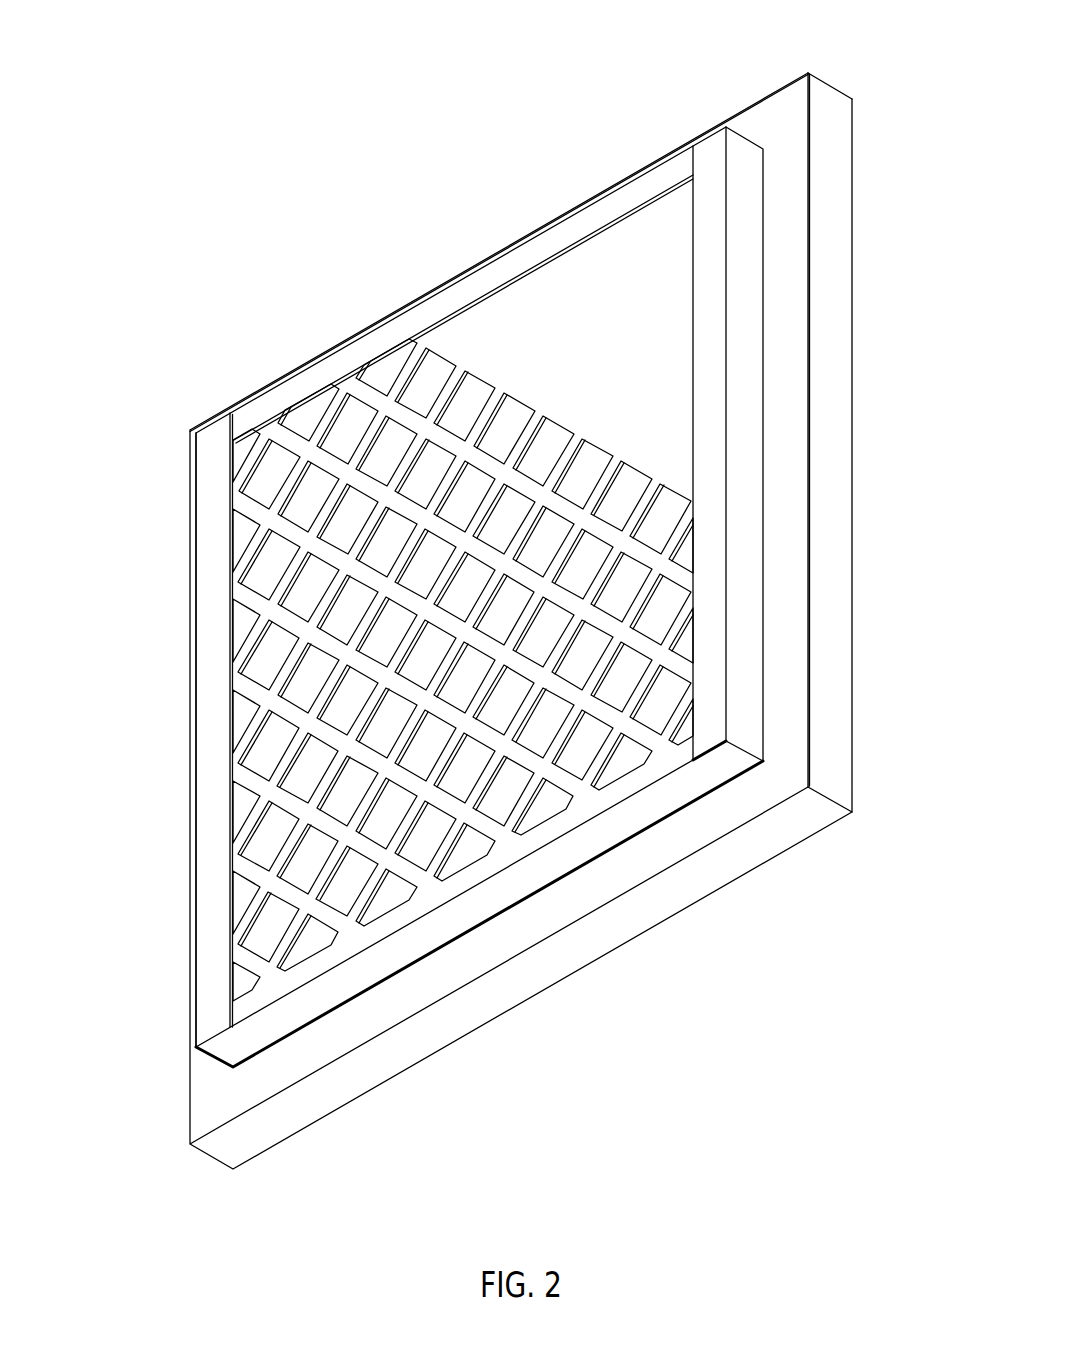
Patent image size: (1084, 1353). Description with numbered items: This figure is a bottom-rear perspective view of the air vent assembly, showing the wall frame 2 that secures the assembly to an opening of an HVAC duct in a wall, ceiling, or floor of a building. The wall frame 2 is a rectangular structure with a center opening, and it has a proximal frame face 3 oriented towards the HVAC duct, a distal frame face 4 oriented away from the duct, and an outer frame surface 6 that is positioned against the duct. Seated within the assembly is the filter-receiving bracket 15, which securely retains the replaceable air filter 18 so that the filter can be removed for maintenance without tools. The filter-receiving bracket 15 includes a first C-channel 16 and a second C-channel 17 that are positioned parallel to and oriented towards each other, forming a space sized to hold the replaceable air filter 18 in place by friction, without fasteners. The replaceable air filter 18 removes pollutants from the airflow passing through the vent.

The wall frame 2 is at (558, 584).
The proximal frame face 3 is at (787, 93).
The distal frame face 4 is at (854, 119).
The outer frame surface 6 is at (843, 545).
The filter-receiving bracket 15 is at (417, 567).
The first C-channel 16 is at (703, 150).
The second C-channel 17 is at (205, 678).
The replaceable air filter 18 is at (418, 317).